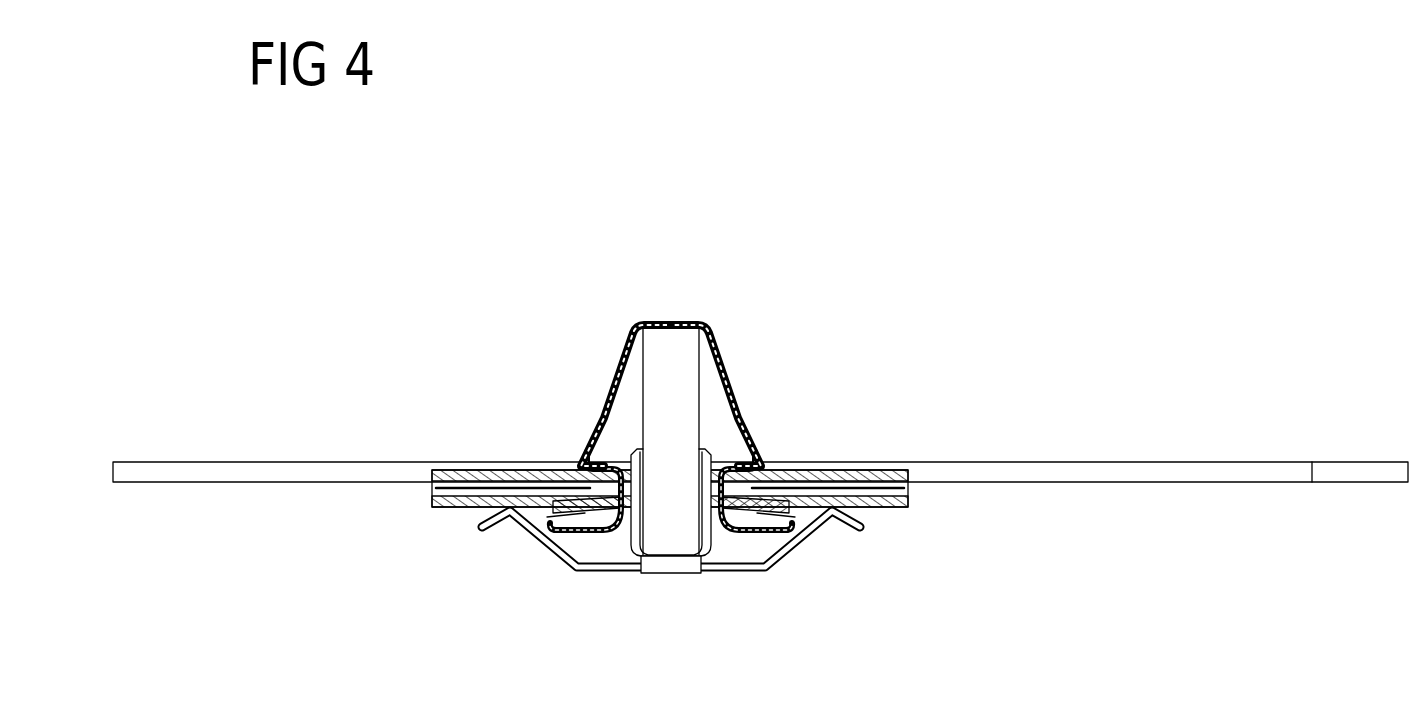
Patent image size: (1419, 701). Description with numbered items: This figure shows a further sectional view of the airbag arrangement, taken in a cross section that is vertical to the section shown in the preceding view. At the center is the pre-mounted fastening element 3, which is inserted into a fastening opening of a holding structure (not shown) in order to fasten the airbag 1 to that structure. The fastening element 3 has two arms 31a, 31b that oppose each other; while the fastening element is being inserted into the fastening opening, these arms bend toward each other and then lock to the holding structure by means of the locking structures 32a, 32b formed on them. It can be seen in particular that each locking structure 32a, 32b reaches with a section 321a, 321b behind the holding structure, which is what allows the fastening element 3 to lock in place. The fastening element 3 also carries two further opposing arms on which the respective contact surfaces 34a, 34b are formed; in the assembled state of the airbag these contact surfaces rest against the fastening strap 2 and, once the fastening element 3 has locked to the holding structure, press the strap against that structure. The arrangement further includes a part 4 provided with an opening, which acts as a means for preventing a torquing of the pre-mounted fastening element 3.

The airbag 1 is at (1168, 475).
The fastening strap 2 is at (452, 510).
The fastening element 3 is at (672, 327).
The arm 31a is at (616, 376).
The arm 31b is at (729, 377).
The locking structure 32a is at (530, 468).
The locking structure 32b is at (810, 466).
The section 321a is at (582, 458).
The section 321b is at (760, 453).
The contact surface 34a is at (511, 518).
The contact surface 34b is at (834, 525).
The part 4 is at (728, 528).